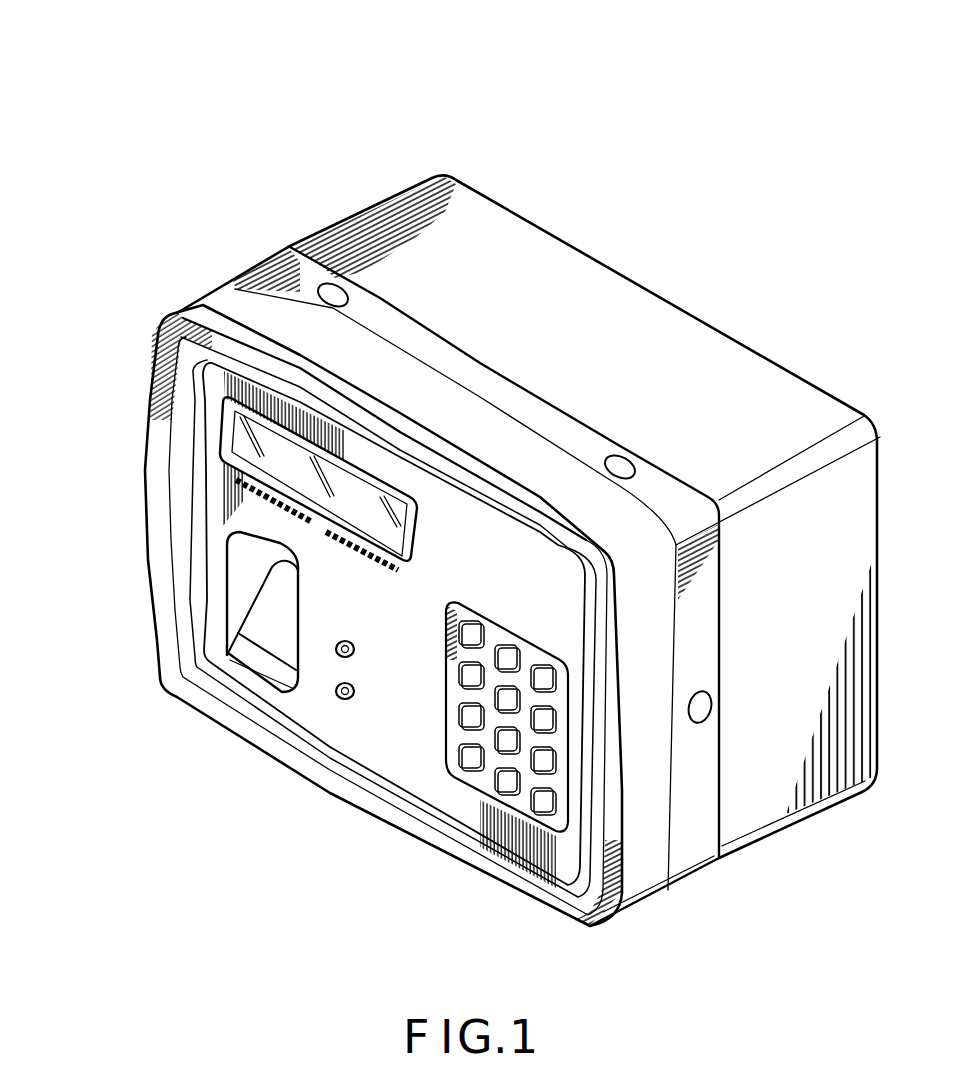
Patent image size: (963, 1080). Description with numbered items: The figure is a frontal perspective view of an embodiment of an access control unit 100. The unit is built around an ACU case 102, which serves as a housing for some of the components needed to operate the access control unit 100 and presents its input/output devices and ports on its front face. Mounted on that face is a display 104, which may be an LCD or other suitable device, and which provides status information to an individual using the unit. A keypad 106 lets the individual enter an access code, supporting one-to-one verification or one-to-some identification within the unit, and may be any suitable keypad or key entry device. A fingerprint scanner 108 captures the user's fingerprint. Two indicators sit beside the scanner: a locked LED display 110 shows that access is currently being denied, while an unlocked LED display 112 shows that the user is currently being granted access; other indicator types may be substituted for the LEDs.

The access control unit 100 is at (152, 46).
The ACU case 102 is at (250, 270).
The display 104 is at (245, 430).
The keypad 106 is at (487, 787).
The fingerprint scanner 108 is at (258, 637).
The locked LED display 110 is at (340, 661).
The unlocked LED display 112 is at (340, 700).